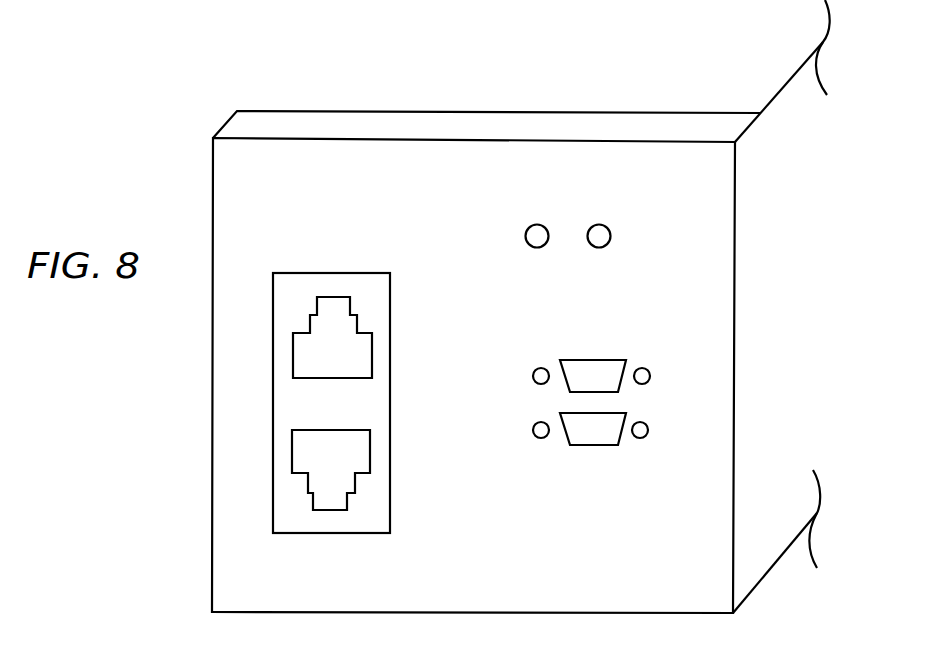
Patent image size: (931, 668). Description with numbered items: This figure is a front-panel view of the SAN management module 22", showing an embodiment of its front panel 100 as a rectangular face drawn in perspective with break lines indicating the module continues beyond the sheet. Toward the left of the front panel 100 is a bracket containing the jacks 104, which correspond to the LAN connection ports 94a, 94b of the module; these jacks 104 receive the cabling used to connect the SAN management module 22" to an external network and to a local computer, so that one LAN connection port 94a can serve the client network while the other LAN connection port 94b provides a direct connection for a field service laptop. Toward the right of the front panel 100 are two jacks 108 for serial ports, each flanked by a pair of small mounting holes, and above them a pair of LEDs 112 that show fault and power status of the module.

The front panel 100 is at (210, 493).
The SAN management module 22 is at (336, 205).
The jacks 104 is at (363, 442).
The LAN connection port 94a is at (357, 370).
The LAN connection port 94b is at (353, 471).
The LEDs 112 is at (600, 233).
The jacks for serial ports 108 is at (598, 432).